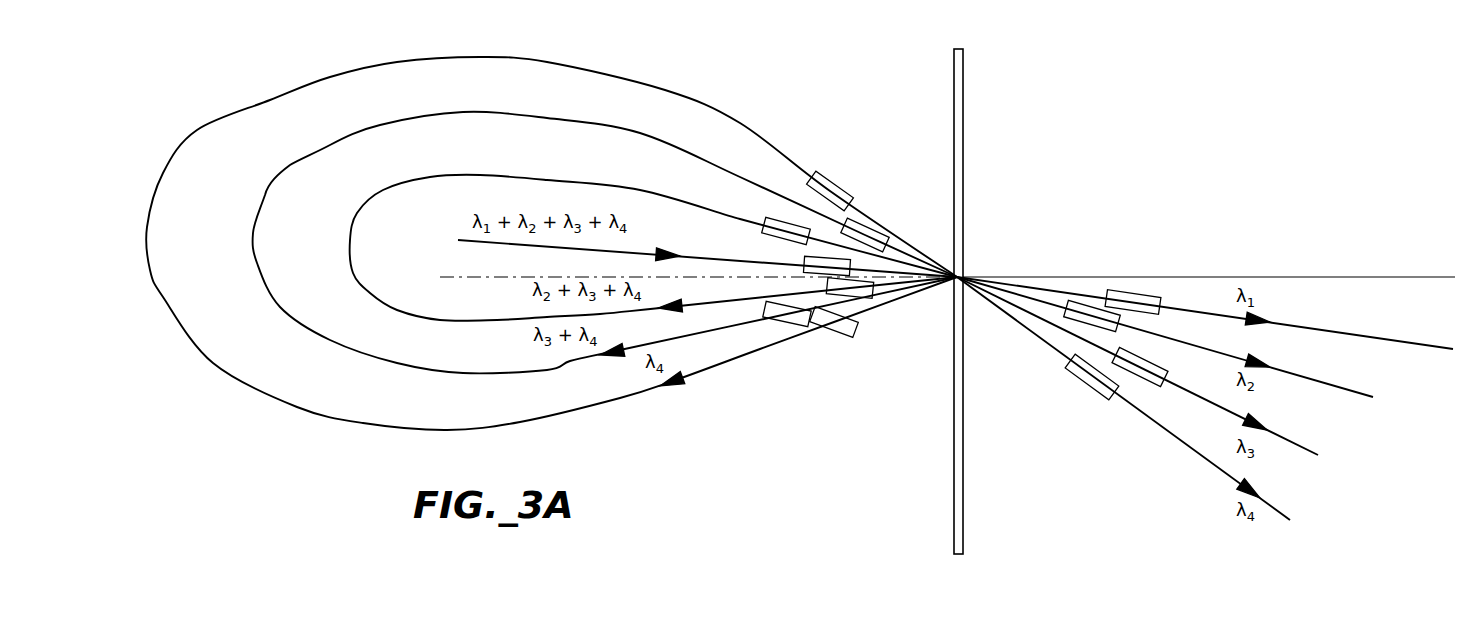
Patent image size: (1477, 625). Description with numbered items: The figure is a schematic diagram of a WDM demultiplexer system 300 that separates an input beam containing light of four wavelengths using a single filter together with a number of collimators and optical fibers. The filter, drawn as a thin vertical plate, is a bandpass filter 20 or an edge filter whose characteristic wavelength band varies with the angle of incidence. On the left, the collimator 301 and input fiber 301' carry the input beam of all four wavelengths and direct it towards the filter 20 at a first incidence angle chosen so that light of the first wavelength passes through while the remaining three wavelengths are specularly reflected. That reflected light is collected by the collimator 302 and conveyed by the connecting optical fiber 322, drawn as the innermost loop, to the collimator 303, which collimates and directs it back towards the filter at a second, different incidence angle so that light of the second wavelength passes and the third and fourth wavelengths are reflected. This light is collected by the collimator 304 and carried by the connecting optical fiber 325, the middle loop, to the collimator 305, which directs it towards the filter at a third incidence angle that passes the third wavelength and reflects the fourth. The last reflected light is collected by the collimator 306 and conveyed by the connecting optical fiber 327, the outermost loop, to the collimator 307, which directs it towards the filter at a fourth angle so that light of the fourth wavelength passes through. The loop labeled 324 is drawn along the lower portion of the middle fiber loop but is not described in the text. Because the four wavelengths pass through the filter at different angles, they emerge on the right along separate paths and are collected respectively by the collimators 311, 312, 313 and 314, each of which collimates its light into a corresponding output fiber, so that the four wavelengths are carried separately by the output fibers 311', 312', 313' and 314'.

The system 300 is at (1118, 127).
The bandpass filter 20 is at (963, 503).
The collimator 301 is at (828, 202).
The input fiber 301' is at (686, 258).
The collimator 302 is at (865, 294).
The collimator 303 is at (782, 222).
The collimator 304 is at (782, 326).
The collimator 305 is at (873, 230).
The collimator 306 is at (837, 333).
The collimator 307 is at (840, 182).
The connecting optical fiber 322 is at (443, 322).
The fiber loop 324 is at (463, 377).
The connecting optical fiber 325 is at (330, 145).
The connecting optical fiber 327 is at (272, 100).
The collimator 311 is at (1148, 276).
The collimator 312 is at (1121, 271).
The collimator 313 is at (1104, 410).
The collimator 314 is at (1070, 395).
The output fiber 311' is at (1215, 313).
The output fiber 312' is at (1190, 337).
The output fiber 313' is at (1164, 366).
The output fiber 314' is at (1154, 398).